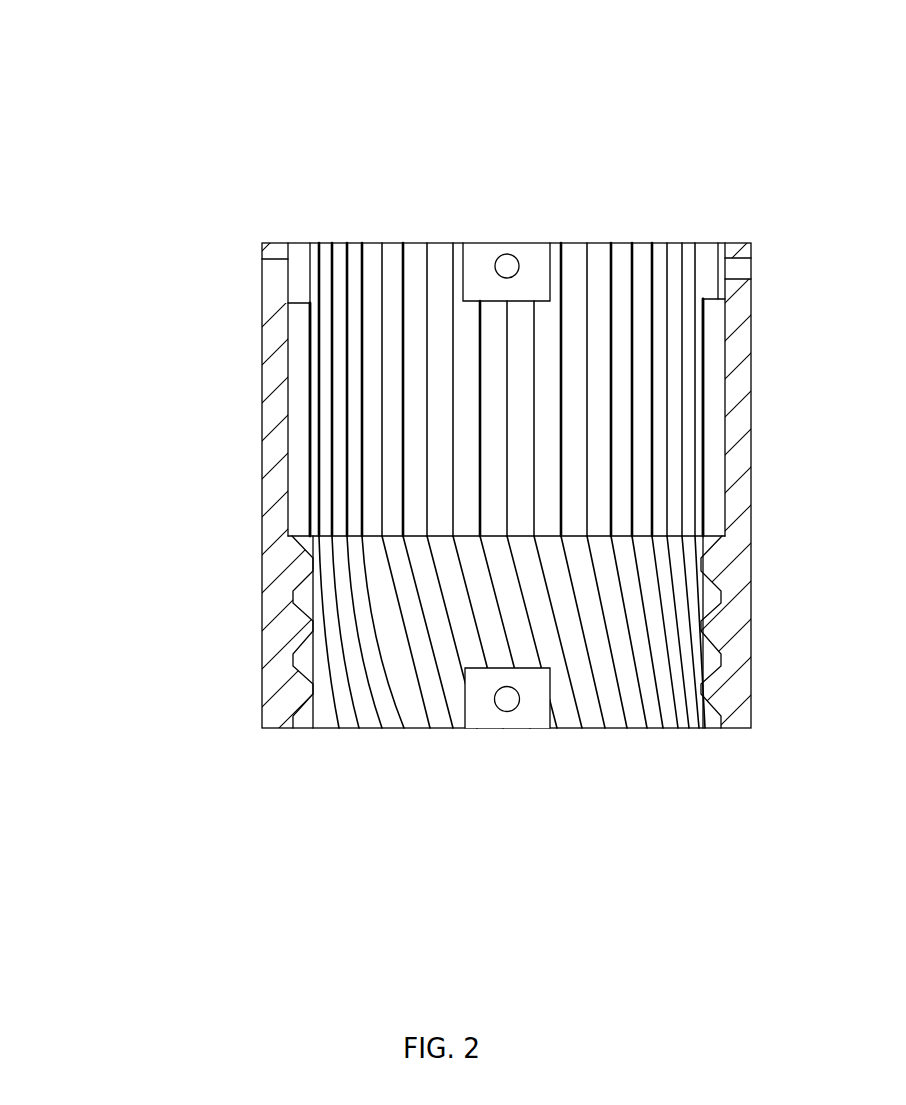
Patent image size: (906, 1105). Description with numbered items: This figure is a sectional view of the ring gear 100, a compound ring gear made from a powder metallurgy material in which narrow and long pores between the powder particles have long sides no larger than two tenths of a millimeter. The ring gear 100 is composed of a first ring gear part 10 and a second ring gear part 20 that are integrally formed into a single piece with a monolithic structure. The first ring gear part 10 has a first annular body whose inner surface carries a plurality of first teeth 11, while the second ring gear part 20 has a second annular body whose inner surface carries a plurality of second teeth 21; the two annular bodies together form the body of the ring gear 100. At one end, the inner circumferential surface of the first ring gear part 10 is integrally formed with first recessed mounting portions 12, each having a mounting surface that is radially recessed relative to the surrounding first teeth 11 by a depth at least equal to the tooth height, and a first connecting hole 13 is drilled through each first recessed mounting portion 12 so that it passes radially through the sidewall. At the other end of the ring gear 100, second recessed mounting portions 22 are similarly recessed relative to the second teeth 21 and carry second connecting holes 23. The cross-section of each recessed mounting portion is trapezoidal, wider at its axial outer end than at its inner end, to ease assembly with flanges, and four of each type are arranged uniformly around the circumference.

The ring gear 100 is at (517, 73).
The first ring gear part 10 is at (287, 633).
The first teeth 11 is at (367, 657).
The first recessed mounting portion 12 is at (533, 713).
The first connecting hole 13 is at (508, 711).
The second ring gear part 20 is at (280, 337).
The second teeth 21 is at (383, 303).
The second recessed mounting portion 22 is at (537, 280).
The second connecting hole 23 is at (506, 253).